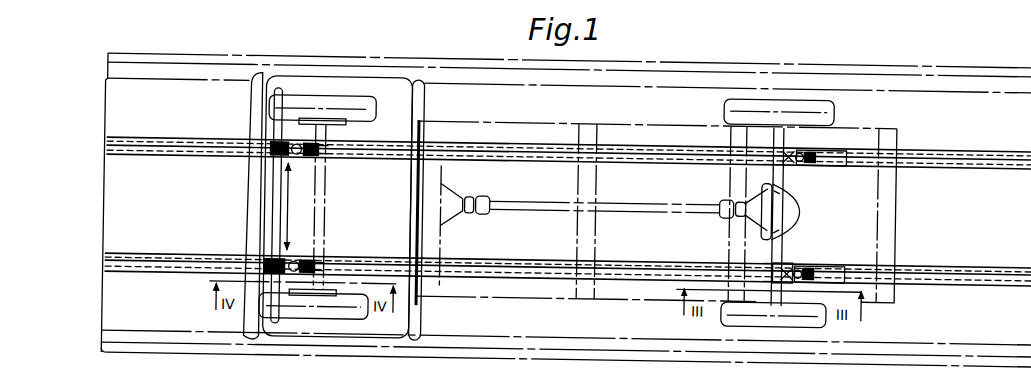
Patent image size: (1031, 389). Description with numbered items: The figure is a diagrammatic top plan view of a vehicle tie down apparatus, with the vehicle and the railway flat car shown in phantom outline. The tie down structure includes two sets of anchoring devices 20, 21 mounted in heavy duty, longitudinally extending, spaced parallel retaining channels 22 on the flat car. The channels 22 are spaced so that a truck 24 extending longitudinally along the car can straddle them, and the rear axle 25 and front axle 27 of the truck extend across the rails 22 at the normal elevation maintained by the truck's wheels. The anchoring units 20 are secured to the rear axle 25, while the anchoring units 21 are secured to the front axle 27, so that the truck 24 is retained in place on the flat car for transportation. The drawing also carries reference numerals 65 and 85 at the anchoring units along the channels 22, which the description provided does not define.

The anchoring devices 20 is at (820, 161).
The anchoring devices 21 is at (287, 206).
The retaining channels 22 is at (1023, 160).
The truck 24 is at (433, 190).
The rear axle 25 is at (785, 256).
The front axle 27 is at (328, 207).
The carriage block 65 is at (283, 141).
The roller assembly 85 is at (300, 141).